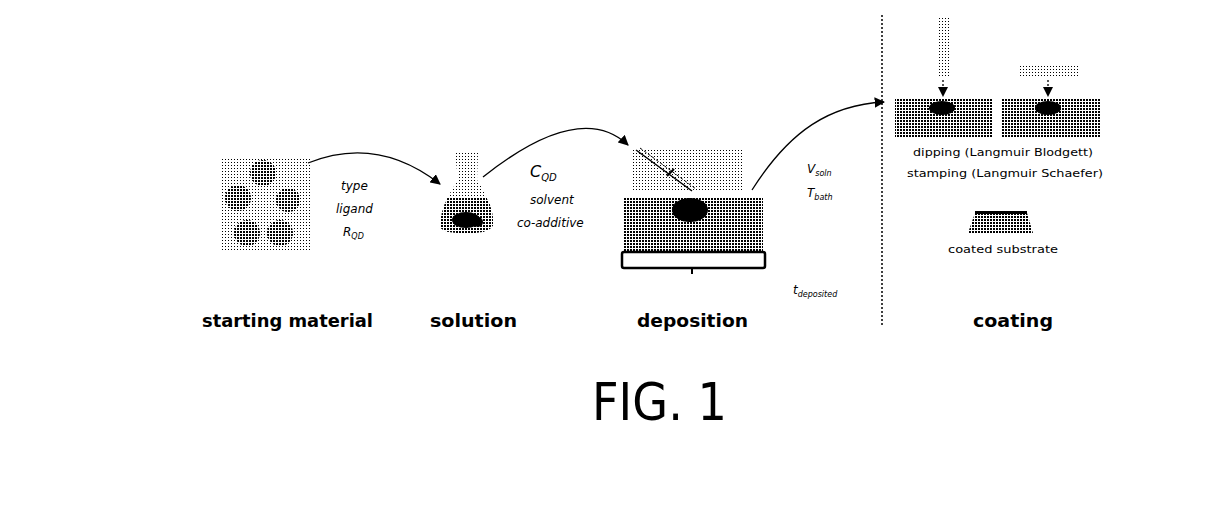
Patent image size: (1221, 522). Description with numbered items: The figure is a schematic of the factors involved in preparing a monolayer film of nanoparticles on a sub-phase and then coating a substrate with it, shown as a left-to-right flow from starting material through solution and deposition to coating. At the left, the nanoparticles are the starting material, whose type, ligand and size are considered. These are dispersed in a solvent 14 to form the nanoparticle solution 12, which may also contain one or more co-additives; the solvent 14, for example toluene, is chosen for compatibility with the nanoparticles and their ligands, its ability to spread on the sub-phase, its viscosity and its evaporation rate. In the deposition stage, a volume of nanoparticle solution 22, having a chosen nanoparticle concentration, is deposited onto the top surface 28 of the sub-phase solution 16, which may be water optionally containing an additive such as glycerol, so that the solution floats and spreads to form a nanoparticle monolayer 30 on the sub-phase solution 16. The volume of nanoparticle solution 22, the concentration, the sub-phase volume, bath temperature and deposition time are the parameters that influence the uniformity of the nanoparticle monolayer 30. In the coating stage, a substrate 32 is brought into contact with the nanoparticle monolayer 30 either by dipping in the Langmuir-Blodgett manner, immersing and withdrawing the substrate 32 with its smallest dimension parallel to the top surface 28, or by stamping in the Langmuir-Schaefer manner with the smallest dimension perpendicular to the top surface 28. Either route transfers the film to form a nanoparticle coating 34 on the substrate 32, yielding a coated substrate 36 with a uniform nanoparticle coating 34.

The nanoparticle solution 12 is at (453, 151).
The solvent 14 is at (476, 224).
The sub-phase solution 16 is at (632, 226).
The volume of nanoparticle solution 22 is at (658, 148).
The top surface 28 is at (660, 199).
The nanoparticle monolayer 30 is at (702, 198).
The substrate 32 is at (1040, 60).
The nanoparticle coating 34 is at (1017, 207).
The coated substrate 36 is at (965, 211).